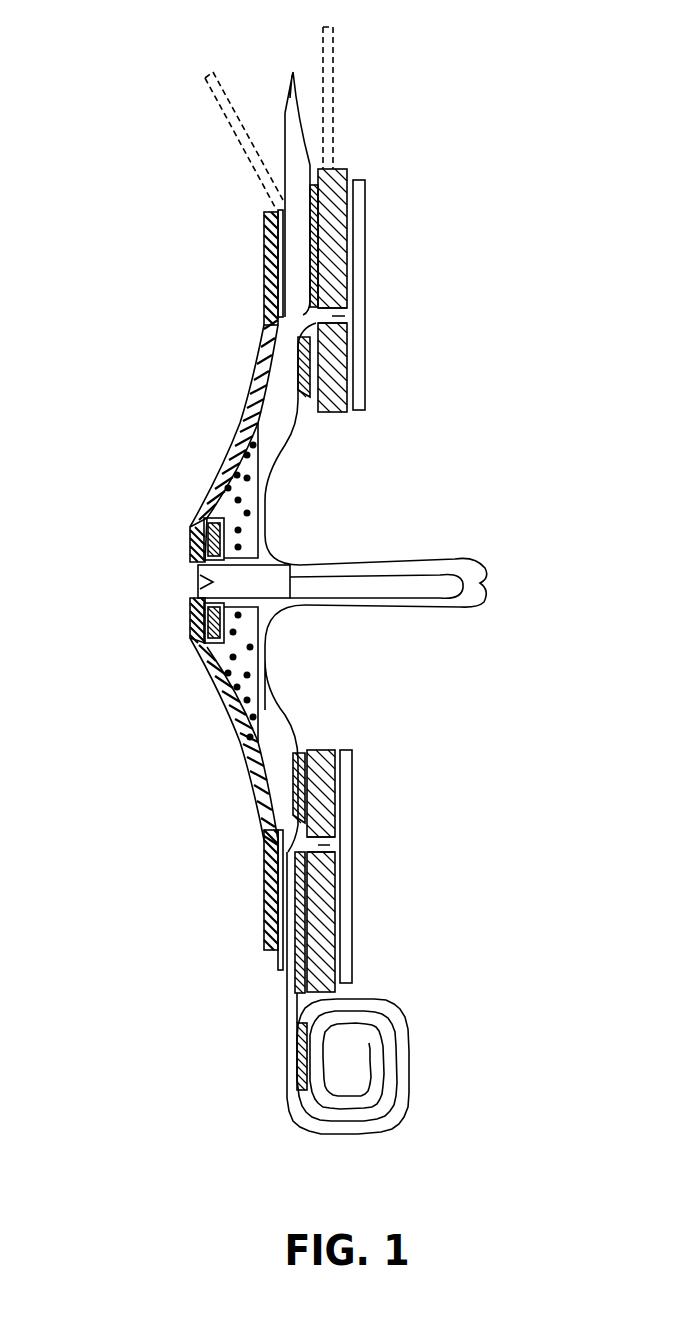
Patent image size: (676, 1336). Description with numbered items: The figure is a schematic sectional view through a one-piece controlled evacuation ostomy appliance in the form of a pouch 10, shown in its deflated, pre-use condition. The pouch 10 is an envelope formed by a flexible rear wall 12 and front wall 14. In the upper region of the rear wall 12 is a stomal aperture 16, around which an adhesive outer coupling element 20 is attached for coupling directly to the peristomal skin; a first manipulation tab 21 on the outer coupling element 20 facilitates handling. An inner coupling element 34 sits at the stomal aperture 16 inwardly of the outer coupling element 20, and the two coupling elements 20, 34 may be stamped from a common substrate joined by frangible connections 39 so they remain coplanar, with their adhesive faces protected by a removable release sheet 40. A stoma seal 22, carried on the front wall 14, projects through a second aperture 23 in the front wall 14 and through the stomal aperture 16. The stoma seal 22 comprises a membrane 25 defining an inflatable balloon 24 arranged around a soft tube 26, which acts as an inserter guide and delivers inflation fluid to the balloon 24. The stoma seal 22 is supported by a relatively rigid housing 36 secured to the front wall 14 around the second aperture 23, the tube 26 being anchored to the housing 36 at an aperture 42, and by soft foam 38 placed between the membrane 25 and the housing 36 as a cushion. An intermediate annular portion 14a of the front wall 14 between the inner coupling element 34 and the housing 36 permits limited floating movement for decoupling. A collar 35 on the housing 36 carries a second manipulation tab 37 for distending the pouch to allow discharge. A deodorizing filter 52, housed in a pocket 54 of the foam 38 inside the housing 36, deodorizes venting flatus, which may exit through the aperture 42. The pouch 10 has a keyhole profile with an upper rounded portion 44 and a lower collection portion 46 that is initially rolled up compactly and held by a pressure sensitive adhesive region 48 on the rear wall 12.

The pouch 10 is at (165, 150).
The rear wall 12 is at (302, 110).
The front wall 14 is at (283, 117).
The intermediate annular portion 14a is at (300, 314).
The stomal aperture 16 is at (306, 312).
The outer coupling element 20 is at (343, 205).
The first manipulation tab 21 is at (332, 47).
The stoma seal 22 is at (315, 504).
The second aperture 23 is at (312, 422).
The inflatable balloon 24 is at (458, 572).
The membrane 25 is at (268, 547).
The tube 26 is at (388, 595).
The inner coupling element 34 is at (333, 360).
The collar 35 is at (278, 252).
The housing 36 is at (253, 385).
The second manipulation tab 37 is at (227, 118).
The foam 38 is at (242, 467).
The frangible connections 39 is at (337, 316).
The release sheet 40 is at (363, 405).
The aperture 42 is at (190, 550).
The upper rounded portion 44 is at (268, 993).
The lower collection portion 46 is at (300, 1132).
The pressure sensitive adhesive region 48 is at (298, 1060).
The deodorizing filter 52 is at (207, 530).
The pocket 54 is at (217, 637).